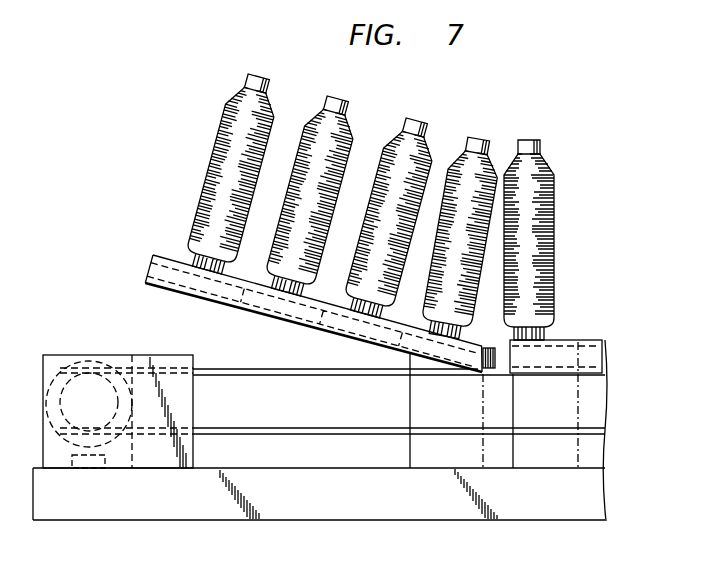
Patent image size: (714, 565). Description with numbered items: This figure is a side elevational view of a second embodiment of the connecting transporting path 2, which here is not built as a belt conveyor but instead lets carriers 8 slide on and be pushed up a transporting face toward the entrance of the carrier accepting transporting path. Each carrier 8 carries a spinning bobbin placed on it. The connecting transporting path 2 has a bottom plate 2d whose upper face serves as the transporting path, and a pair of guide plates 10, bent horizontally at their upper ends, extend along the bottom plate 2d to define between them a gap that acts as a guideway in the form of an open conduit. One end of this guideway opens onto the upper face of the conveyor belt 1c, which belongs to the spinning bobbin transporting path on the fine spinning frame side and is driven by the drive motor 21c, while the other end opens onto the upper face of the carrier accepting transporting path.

The conveyor belt 1c is at (262, 375).
The connecting transporting path 2 is at (324, 221).
The bottom plate 2d is at (323, 325).
The carrier 8 is at (262, 308).
The guide plate 10 is at (581, 340).
The drive motor 21c is at (91, 354).